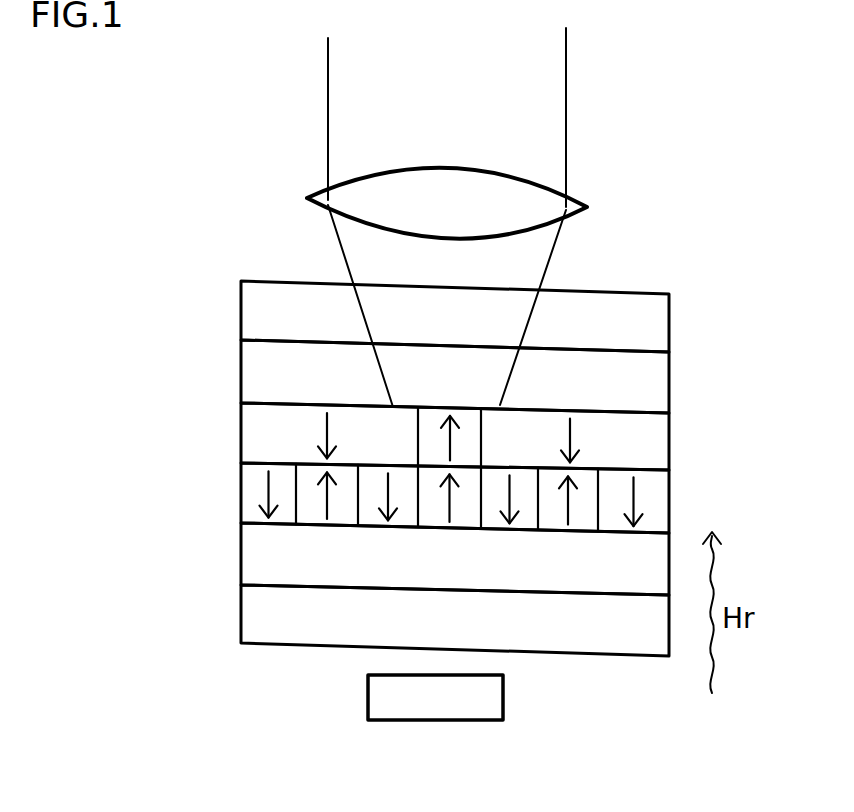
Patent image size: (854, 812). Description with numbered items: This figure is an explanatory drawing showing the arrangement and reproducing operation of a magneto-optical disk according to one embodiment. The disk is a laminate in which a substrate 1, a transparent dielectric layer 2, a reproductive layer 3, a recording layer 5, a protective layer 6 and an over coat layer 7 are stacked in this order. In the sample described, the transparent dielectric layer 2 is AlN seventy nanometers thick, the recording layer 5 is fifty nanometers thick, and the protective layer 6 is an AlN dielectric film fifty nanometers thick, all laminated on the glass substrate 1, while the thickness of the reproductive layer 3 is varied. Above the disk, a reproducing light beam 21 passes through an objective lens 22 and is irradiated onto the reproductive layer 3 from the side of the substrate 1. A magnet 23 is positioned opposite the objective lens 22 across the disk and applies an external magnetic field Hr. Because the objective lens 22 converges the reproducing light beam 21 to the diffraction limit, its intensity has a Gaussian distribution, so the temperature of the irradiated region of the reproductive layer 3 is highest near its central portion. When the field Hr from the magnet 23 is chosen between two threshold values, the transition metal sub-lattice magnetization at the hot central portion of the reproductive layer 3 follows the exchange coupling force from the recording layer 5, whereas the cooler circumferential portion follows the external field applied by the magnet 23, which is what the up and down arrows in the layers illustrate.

The substrate 1 is at (254, 315).
The transparent dielectric layer 2 is at (256, 385).
The reproductive layer 3 is at (256, 436).
The recording layer 5 is at (258, 492).
The protective layer 6 is at (258, 556).
The over coat layer 7 is at (260, 613).
The reproducing light beam 21 is at (567, 128).
The objective lens 22 is at (537, 198).
The magnet 23 is at (503, 704).